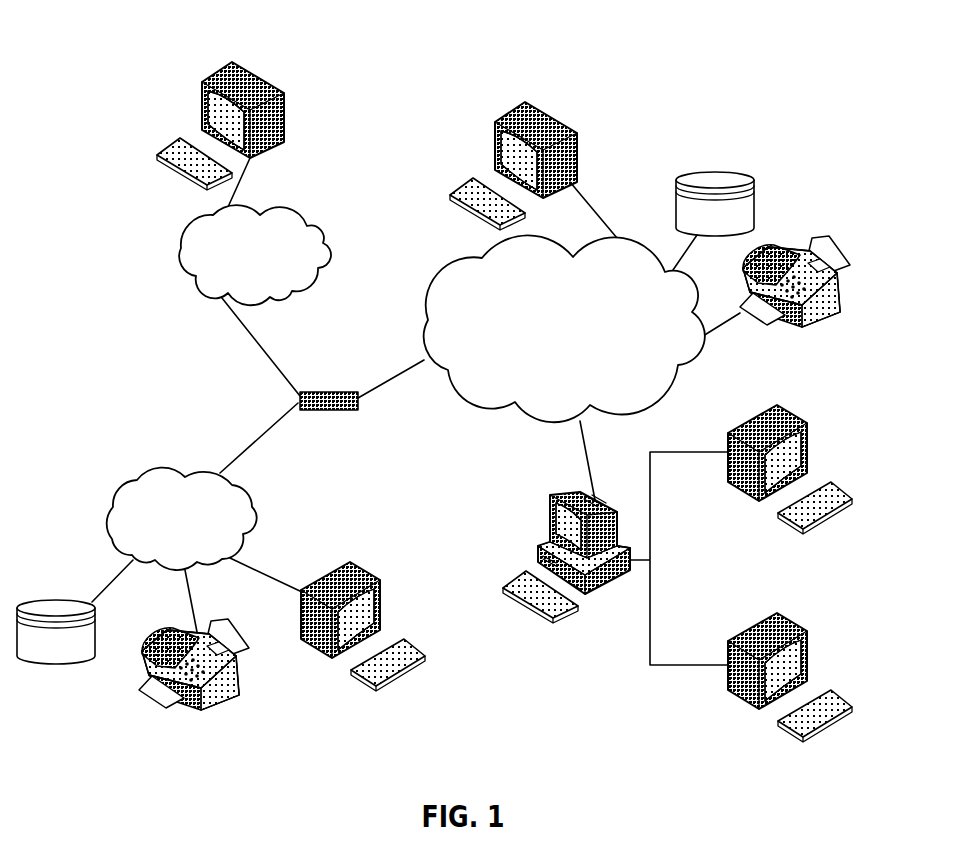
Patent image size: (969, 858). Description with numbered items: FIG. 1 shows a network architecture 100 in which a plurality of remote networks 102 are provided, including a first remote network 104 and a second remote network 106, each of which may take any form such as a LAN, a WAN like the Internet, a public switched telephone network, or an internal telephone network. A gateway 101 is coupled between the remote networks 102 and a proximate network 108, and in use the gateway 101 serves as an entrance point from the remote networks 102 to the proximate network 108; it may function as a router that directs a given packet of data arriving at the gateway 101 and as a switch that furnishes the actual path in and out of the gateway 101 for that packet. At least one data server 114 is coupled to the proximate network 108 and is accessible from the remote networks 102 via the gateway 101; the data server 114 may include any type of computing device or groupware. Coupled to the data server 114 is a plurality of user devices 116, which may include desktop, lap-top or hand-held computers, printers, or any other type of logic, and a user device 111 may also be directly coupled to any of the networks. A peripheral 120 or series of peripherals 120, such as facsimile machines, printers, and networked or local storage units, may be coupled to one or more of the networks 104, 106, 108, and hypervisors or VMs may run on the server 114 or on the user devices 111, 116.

The architecture 100 is at (130, 43).
The gateway 101 is at (313, 390).
The remote networks 102 is at (156, 315).
The first remote network 104 is at (113, 494).
The second remote network 106 is at (321, 228).
The proximate network 108 is at (662, 392).
The user device 111 is at (577, 133).
The data server 114 is at (548, 513).
The user devices 116 is at (284, 101).
The peripheral 120 is at (757, 182).